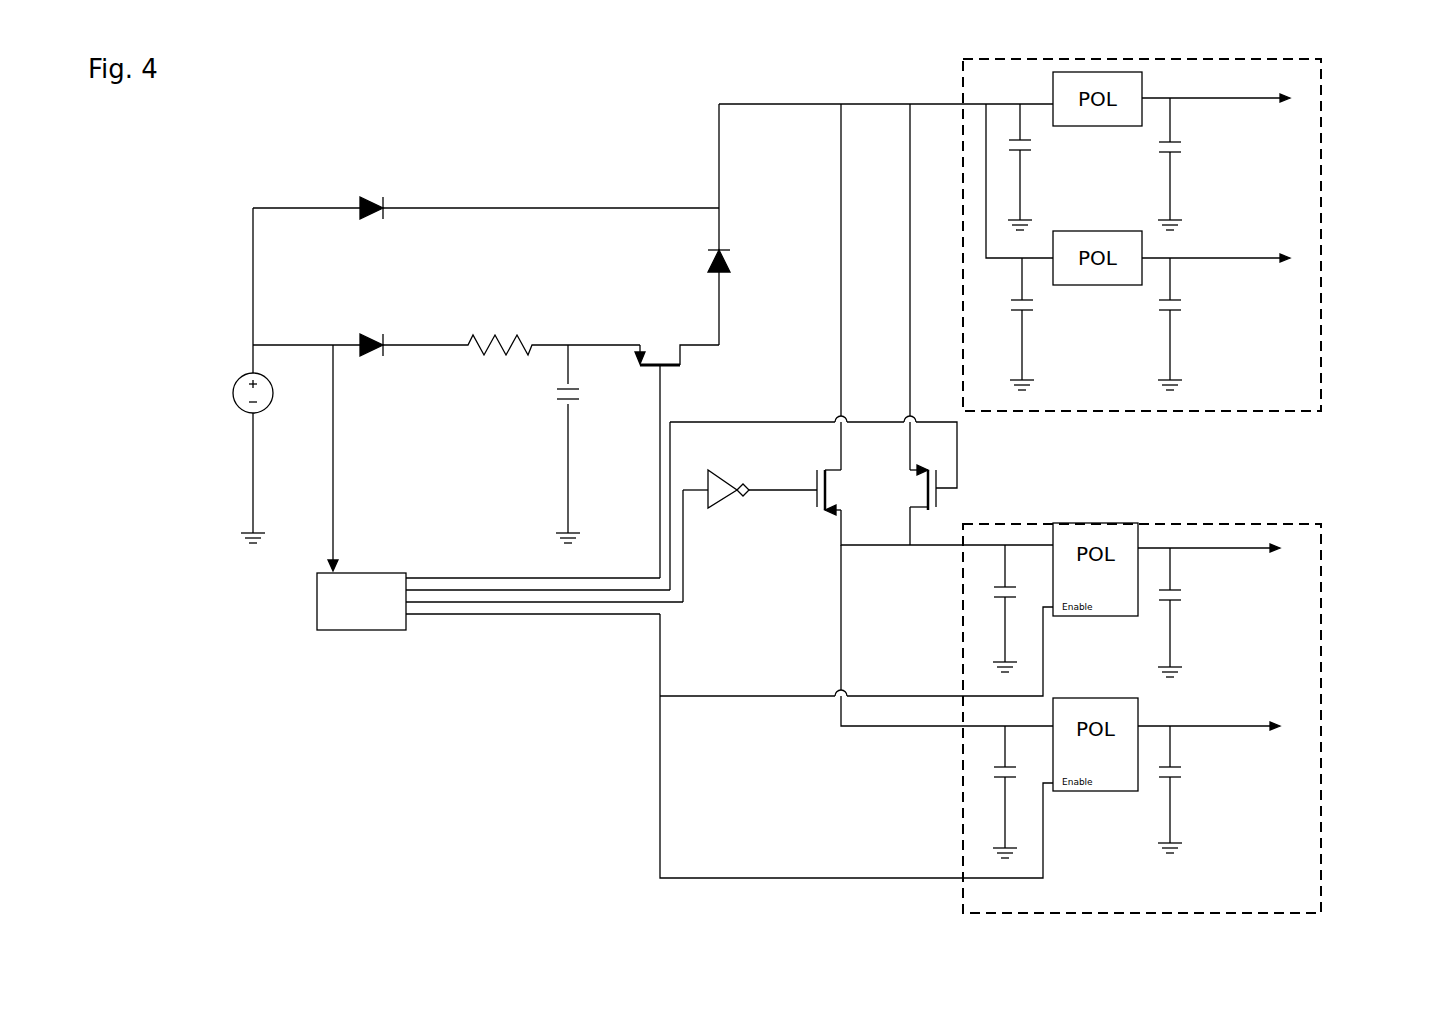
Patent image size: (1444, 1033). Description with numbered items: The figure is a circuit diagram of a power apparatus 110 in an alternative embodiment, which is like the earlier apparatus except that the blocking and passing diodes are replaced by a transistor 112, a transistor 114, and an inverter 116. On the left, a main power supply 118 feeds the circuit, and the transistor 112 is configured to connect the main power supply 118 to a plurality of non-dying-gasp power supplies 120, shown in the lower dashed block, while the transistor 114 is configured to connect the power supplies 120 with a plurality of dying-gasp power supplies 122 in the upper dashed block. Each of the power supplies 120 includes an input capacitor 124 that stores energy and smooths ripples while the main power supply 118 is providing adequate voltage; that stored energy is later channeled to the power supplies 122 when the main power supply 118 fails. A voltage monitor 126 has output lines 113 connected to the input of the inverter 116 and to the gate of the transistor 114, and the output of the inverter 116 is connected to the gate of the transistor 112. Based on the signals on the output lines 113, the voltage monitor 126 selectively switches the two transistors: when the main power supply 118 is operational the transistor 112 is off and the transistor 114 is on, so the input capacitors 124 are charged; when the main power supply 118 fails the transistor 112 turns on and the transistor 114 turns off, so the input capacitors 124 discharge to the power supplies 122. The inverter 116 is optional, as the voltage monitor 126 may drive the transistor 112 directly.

The power apparatus 110 is at (352, 137).
The transistor 112 is at (812, 500).
The output lines 113 is at (455, 605).
The transistor 114 is at (940, 503).
The inverter 116 is at (737, 505).
The main power supply 118 is at (232, 395).
The power supplies 120 is at (1321, 715).
The power supplies 122 is at (1321, 230).
The input capacitor 124 is at (1000, 597).
The voltage monitor 126 is at (360, 632).